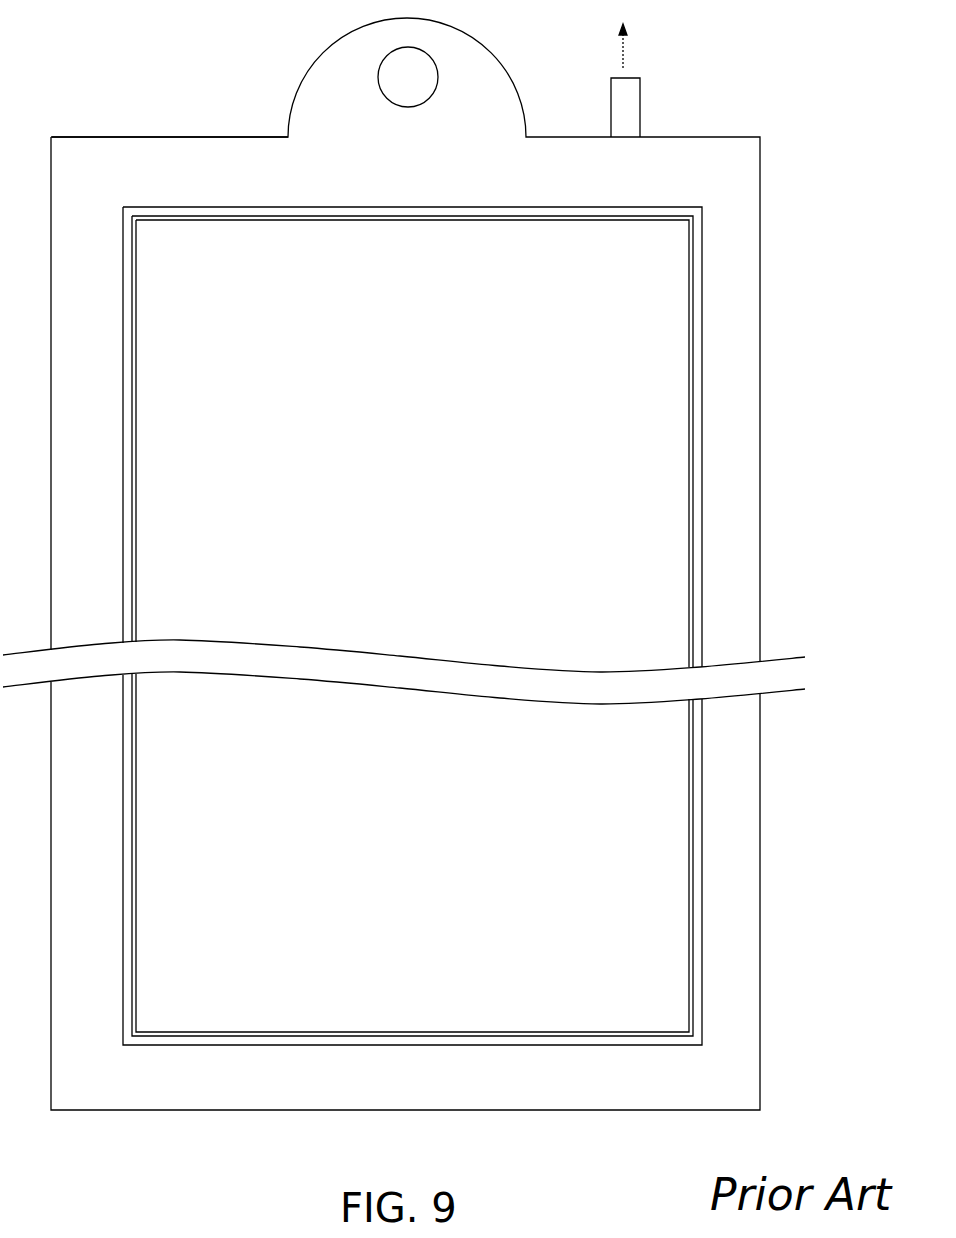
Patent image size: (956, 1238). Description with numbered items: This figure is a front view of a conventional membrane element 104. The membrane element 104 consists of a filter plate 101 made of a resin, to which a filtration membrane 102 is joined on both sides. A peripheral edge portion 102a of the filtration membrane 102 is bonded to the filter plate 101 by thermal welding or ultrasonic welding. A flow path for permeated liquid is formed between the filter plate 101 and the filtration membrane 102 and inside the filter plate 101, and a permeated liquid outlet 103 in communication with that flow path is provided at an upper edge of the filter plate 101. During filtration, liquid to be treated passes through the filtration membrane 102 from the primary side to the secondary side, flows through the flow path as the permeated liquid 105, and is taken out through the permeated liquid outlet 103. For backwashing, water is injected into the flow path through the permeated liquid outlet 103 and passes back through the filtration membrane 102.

The filter plate 101 is at (752, 438).
The filtration membrane 102 is at (617, 580).
The peripheral edge portion 102a is at (689, 298).
The permeated liquid outlet 103 is at (626, 110).
The membrane element 104 is at (210, 137).
The permeated liquid 105 is at (624, 57).